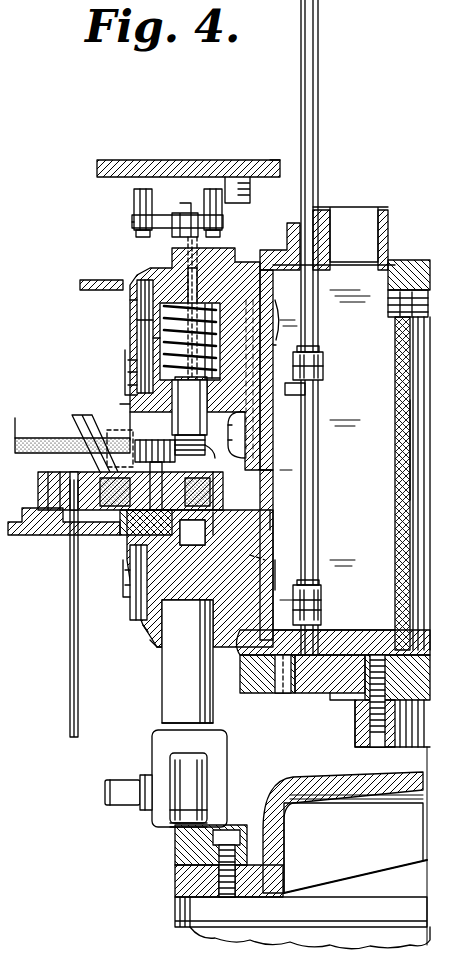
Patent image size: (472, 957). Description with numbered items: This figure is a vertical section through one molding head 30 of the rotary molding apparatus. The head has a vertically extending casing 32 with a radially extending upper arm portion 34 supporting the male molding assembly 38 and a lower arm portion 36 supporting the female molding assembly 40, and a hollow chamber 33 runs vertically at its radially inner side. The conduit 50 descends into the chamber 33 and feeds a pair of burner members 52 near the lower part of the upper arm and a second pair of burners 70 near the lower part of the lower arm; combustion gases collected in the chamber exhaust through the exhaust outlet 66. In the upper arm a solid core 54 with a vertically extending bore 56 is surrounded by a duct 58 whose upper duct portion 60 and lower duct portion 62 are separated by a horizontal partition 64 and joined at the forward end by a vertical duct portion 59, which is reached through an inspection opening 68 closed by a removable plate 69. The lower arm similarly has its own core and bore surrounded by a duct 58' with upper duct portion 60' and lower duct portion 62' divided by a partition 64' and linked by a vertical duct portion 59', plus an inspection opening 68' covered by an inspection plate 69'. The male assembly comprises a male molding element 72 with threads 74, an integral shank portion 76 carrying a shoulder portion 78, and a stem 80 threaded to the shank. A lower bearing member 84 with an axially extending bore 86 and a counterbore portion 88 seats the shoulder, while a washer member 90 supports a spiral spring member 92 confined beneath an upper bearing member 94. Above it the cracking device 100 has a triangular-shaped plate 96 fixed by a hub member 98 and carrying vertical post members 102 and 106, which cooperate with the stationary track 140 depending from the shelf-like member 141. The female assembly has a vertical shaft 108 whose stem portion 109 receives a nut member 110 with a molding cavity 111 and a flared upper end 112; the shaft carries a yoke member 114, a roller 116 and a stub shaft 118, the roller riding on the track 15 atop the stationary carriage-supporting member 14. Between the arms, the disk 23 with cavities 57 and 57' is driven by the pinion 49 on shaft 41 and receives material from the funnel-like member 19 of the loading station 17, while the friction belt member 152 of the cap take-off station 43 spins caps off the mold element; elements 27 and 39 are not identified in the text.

The stationary carriage-supporting member 14 is at (175, 884).
The track 15 is at (175, 852).
The loading station 17 is at (67, 424).
The funnel-like member 19 is at (107, 430).
The disk 23 is at (169, 481).
The top plate 27 is at (270, 161).
The molding head 30 is at (398, 262).
The casing 32 is at (418, 470).
The hollow chamber 33 is at (334, 447).
The upper arm portion 34 is at (120, 404).
The lower arm portion 36 is at (125, 617).
The male molding assembly 38 is at (220, 438).
The lower plate 39 is at (50, 536).
The female molding assembly 40 is at (157, 707).
The shaft 41 is at (70, 657).
The cap take-off station 43 is at (56, 443).
The driving pinion 49 is at (55, 490).
The conduit means 50 is at (319, 130).
The burner members 52 is at (324, 372).
The solid core 54 is at (117, 301).
The vertically extending bore 56 is at (128, 337).
The cavities 57 is at (96, 482).
The packing 57' is at (218, 489).
The duct 58 is at (125, 319).
The duct 58' is at (125, 634).
The vertical duct portion 59 is at (116, 325).
The vertical duct portion 59' is at (123, 581).
The upper duct portion 60 is at (280, 346).
The upper horizontal duct portion 60' is at (281, 555).
The lower duct portion 62 is at (286, 341).
The lower horizontal duct portion 62' is at (334, 688).
The horizontal partition 64 is at (287, 320).
The horizontal partition 64' is at (288, 575).
The exhaust outlet 66 is at (358, 210).
The inspection opening 68 is at (113, 369).
The inspection opening 68' is at (111, 584).
The removable plate 69 is at (113, 371).
The inspection plate 69' is at (111, 578).
The burners 70 is at (322, 604).
The male molding element 72 is at (222, 454).
The threads 74 is at (200, 455).
The shank portion 76 is at (166, 440).
The shoulder portion 78 is at (189, 407).
The stem 80 is at (198, 258).
The lower bearing member 84 is at (288, 396).
The axially extending bore 86 is at (218, 422).
The counterbore portion 88 is at (128, 387).
The washer member 90 is at (222, 362).
The spiral spring member 92 is at (220, 322).
The upper bearing member 94 is at (222, 262).
The triangular-shaped plate 96 is at (170, 214).
The hub member 98 is at (172, 235).
The cracking device 100 is at (126, 226).
The vertical post member 102 is at (143, 189).
The vertical post member 106 is at (213, 189).
The vertical shaft 108 is at (170, 682).
The stem portion 109 is at (250, 556).
The nut member 110 is at (273, 520).
The molding cavity 111 is at (193, 532).
The flared upper end 112 is at (215, 512).
The yoke member 114 is at (227, 752).
The roller 116 is at (170, 826).
The stub shaft 118 is at (130, 778).
The stationary track 140 is at (251, 192).
The shelf-like member 141 is at (190, 158).
The friction belt member 152 is at (17, 420).